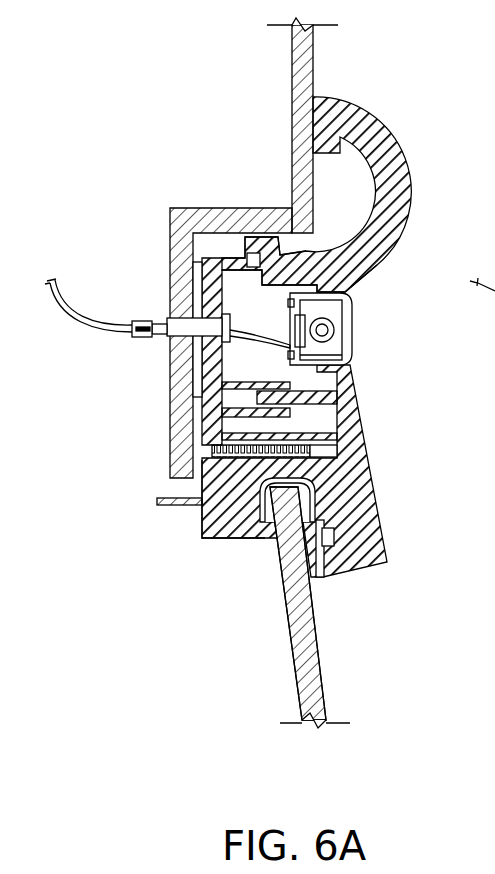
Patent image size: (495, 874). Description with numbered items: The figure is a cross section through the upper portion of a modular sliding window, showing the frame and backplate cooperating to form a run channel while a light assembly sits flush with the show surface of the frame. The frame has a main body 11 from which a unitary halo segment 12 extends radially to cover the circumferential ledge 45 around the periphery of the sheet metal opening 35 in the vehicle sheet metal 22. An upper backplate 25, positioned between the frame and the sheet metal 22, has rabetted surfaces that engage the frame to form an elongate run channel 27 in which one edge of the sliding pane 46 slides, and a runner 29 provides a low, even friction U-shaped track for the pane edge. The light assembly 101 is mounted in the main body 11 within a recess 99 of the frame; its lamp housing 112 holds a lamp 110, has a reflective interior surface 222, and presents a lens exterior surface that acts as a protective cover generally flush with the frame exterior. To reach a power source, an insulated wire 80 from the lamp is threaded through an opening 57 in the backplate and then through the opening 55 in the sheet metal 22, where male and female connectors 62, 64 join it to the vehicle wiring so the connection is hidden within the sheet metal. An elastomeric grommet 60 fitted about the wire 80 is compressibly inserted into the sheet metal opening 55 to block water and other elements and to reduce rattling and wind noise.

The main body 11 is at (370, 470).
The halo segment 12 is at (350, 110).
The sheet metal 22 is at (292, 72).
The upper backplate 25 is at (203, 538).
The run channel 27 is at (277, 510).
The runner 29 is at (322, 503).
The sheet metal opening 35 is at (172, 488).
The circumferential ledge 45 is at (283, 230).
The sliding pane 46 is at (293, 662).
The sheet metal opening 55 is at (183, 318).
The backplate opening 57 is at (229, 315).
The elastomeric grommet 60 is at (167, 337).
The connector 62 is at (147, 320).
The connector 64 is at (150, 333).
The insulated wire 80 is at (56, 279).
The recess 99 is at (293, 357).
The light assembly 101 is at (362, 329).
The lamp 110 is at (323, 318).
The lamp housing 112 is at (343, 343).
The reflective interior surface 222 is at (373, 262).